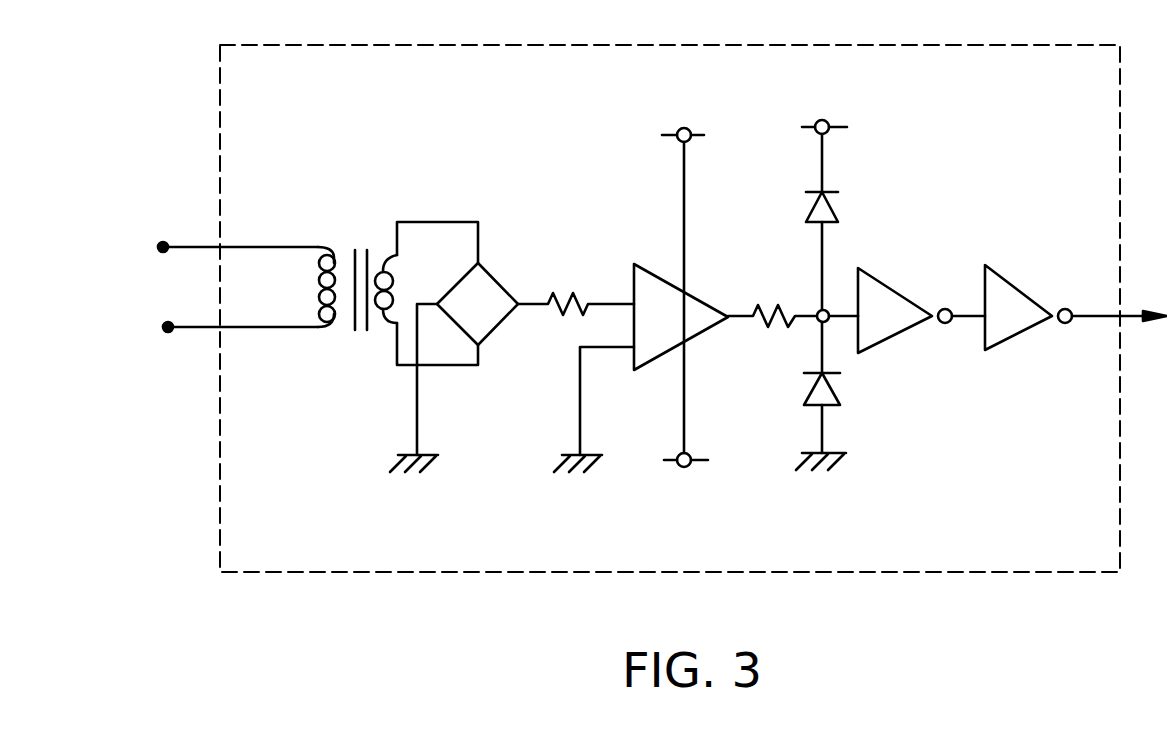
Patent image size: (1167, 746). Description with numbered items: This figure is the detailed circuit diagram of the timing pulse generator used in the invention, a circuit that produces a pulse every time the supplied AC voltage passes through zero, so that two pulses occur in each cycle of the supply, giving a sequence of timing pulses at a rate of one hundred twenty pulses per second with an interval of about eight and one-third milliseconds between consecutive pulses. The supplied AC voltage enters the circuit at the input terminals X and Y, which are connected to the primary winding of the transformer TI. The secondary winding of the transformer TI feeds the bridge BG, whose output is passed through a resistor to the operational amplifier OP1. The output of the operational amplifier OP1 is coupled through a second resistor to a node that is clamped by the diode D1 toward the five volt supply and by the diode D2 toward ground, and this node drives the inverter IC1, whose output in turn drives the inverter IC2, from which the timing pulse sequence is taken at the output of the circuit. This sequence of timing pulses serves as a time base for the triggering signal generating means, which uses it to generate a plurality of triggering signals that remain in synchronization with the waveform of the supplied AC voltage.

The input terminal X is at (224, 249).
The input terminal Y is at (224, 328).
The transformer TI is at (357, 269).
The bridge rectifier BG is at (454, 325).
The operational amplifier OP1 is at (641, 301).
The diode D1 is at (809, 199).
The diode D2 is at (806, 396).
The inverter IC1 is at (914, 293).
The inverter IC2 is at (1068, 292).